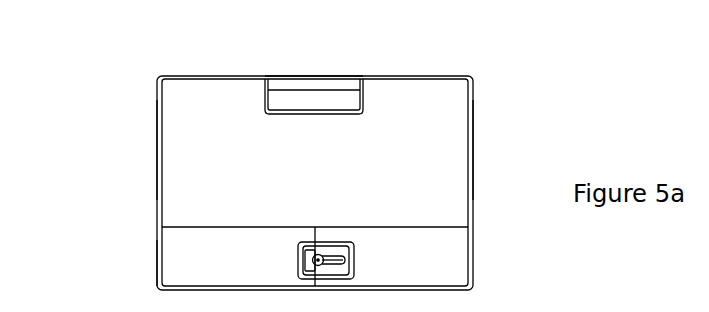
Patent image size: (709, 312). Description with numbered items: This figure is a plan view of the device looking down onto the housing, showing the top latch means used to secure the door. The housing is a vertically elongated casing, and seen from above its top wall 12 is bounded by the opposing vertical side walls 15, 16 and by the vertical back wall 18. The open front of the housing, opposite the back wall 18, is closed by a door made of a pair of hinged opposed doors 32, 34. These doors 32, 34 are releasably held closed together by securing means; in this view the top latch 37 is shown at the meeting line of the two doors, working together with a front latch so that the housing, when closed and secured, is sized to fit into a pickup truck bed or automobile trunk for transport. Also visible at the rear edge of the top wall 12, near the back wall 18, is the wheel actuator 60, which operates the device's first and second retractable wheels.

The top wall 12 is at (453, 135).
The side wall 15 is at (478, 152).
The side wall 16 is at (152, 135).
The back wall 18 is at (378, 75).
The hinged door 32 is at (473, 260).
The hinged door 34 is at (152, 258).
The top latch 37 is at (356, 253).
The wheel actuator 60 is at (293, 85).